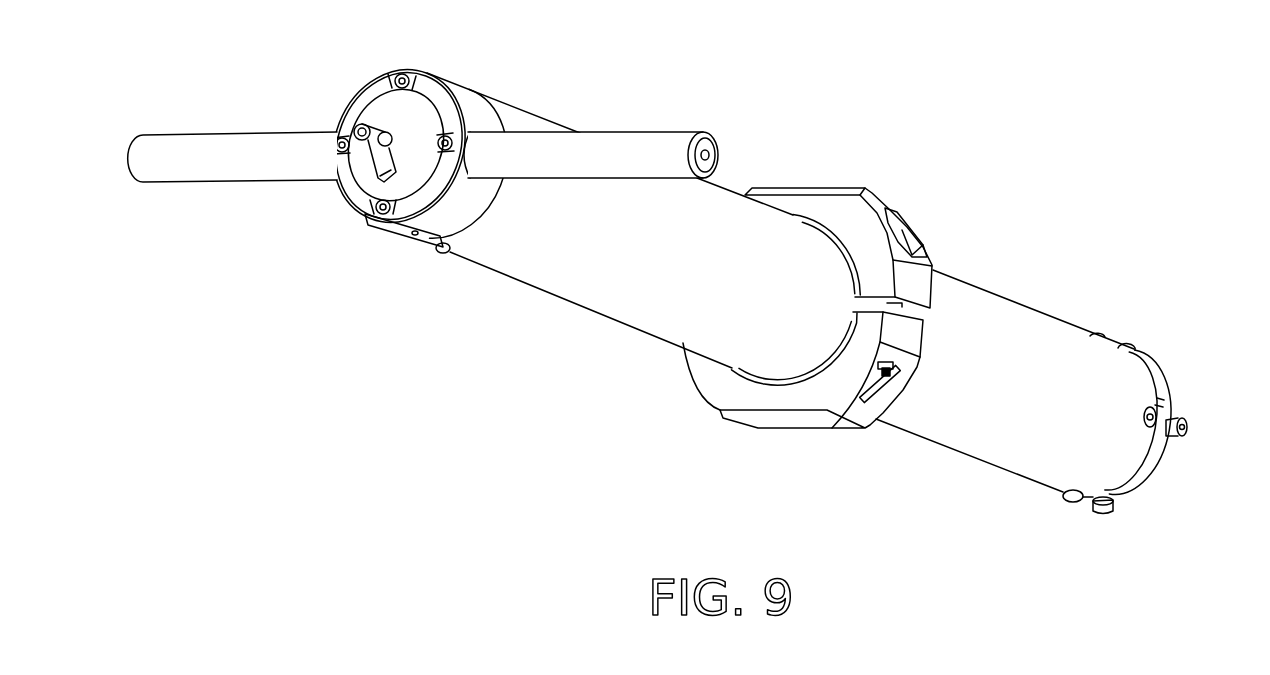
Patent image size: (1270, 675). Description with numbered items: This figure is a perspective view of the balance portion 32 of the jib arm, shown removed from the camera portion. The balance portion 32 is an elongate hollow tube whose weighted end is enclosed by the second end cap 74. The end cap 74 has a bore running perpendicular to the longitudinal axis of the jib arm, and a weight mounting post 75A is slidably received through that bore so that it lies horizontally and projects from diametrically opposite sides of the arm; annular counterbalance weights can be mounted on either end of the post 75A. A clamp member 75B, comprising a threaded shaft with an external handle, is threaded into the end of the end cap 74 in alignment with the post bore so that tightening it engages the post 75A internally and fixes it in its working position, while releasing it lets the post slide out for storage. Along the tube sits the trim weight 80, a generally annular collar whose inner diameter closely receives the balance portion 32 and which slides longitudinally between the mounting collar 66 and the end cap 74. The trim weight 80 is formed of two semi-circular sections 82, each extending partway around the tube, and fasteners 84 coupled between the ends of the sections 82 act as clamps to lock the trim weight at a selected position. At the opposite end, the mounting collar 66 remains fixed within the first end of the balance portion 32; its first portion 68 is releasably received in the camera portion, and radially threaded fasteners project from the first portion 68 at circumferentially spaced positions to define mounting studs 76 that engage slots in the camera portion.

The balance portion 32 is at (993, 307).
The second end cap 74 is at (469, 107).
The weight mounting post 75A is at (223, 137).
The clamp member 75B is at (370, 150).
The trim weight 80 is at (807, 305).
The semi-circular sections 82 is at (812, 203).
The fasteners 84 is at (885, 376).
The mounting collar 66 is at (1158, 374).
The first portion 68 is at (1158, 460).
The mounting studs 76 is at (1188, 428).